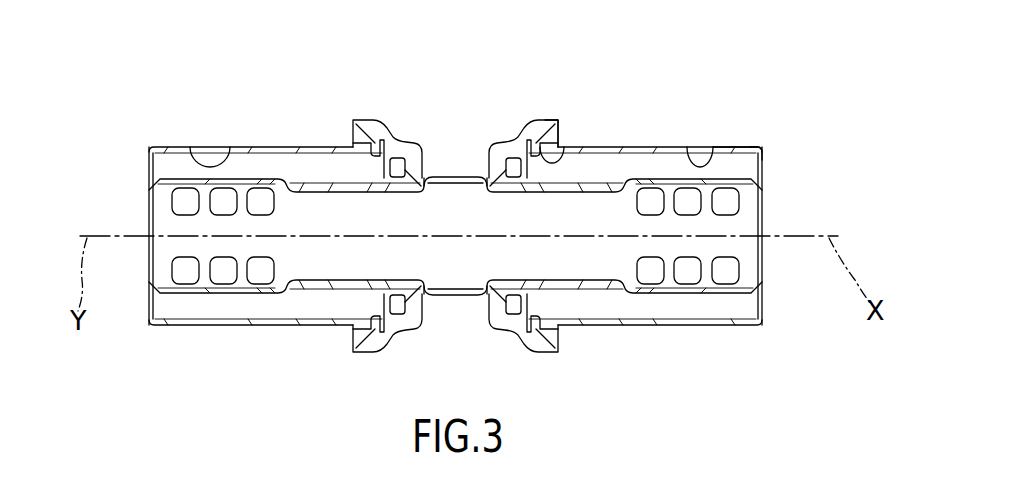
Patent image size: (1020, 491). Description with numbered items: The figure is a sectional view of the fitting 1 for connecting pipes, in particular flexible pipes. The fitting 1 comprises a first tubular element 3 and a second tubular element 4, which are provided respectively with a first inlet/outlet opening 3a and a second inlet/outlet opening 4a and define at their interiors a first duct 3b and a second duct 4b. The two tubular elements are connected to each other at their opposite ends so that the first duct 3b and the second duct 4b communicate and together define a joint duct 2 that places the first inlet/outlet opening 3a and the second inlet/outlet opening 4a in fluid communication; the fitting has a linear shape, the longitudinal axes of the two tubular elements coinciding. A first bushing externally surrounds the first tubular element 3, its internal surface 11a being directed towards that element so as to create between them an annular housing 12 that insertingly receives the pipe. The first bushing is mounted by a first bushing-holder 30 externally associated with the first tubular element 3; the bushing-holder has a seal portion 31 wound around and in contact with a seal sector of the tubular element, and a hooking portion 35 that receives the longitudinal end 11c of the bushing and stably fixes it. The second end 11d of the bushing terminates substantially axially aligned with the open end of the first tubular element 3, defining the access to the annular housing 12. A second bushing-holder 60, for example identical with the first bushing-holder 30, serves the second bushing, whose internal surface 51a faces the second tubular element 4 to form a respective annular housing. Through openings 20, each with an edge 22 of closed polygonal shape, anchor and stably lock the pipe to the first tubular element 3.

The fitting 1 is at (472, 202).
The joint duct 2 is at (463, 250).
The first tubular element 3 is at (663, 212).
The first inlet/outlet opening 3a is at (762, 213).
The first duct 3b is at (578, 226).
The second tubular element 4 is at (253, 199).
The second inlet/outlet opening 4a is at (149, 205).
The second duct 4b is at (373, 226).
The internal surface of first bushing 11a is at (719, 147).
The longitudinal end of first bushing 11c is at (561, 147).
The second end of first bushing 11d is at (772, 147).
The annular housing 12 is at (645, 165).
The through openings 20 is at (770, 192).
The edge of through opening 22 is at (727, 283).
The first bushing-holder 30 is at (501, 86).
The seal portion 31 is at (562, 296).
The hooking portion 35 is at (495, 313).
The internal surface of second bushing 51a is at (187, 147).
The second bushing-holder 60 is at (389, 80).